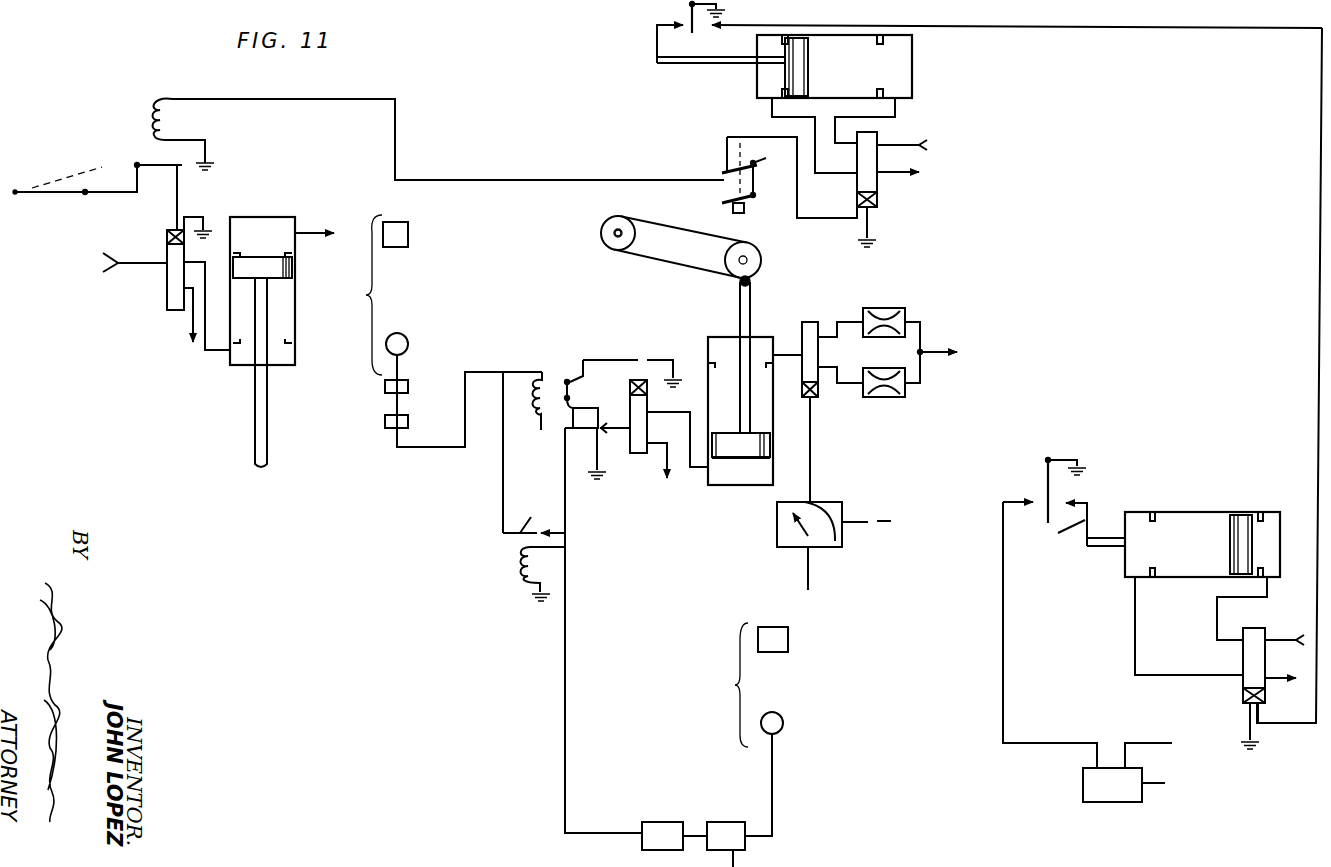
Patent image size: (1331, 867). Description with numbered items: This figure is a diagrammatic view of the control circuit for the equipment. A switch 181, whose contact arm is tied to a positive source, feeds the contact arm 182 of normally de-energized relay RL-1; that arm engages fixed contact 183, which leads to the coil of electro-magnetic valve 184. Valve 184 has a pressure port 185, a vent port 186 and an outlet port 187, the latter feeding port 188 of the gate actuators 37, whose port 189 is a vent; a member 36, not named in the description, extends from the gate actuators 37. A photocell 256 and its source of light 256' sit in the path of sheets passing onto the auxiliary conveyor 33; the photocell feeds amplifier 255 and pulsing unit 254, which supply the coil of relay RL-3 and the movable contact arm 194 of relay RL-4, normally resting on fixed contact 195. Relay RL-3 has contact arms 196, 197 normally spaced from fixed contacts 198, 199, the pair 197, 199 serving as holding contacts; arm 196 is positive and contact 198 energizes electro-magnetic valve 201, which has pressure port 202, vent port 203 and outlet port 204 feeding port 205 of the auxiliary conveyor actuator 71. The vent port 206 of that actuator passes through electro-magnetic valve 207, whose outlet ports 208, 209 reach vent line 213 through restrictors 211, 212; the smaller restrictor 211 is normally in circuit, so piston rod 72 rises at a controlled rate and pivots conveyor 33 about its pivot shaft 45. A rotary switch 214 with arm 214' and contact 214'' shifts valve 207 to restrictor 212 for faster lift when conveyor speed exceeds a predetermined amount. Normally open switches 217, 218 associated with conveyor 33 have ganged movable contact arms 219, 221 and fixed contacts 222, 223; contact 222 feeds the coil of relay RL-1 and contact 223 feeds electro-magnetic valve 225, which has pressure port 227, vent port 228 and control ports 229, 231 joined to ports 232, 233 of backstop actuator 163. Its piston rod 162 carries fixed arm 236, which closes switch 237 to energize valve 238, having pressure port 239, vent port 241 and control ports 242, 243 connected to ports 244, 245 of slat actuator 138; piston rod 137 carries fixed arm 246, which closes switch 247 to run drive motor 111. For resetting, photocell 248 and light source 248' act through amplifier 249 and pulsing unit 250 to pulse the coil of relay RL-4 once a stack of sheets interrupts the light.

The relay RL-1 is at (150, 113).
The switch 181 is at (38, 196).
The contact arm 182 is at (152, 163).
The fixed contact 183 is at (177, 172).
The electro-magnetic valve 184 is at (165, 288).
The pressure port 185 is at (165, 267).
The vent port 186 is at (167, 322).
The outlet port 187 is at (193, 252).
The port 188 is at (228, 353).
The vent port 189 is at (297, 231).
The piston rod 36 is at (255, 426).
The gate actuators 37 is at (300, 318).
The source of light 256' is at (413, 295).
The photocell 256 is at (464, 433).
The amplifier 255 is at (387, 389).
The pulsing unit 254 is at (387, 423).
The relay RL-3 is at (545, 374).
The contact arm 196 is at (578, 380).
The contact arm 197 is at (585, 400).
The fixed contact 198 is at (582, 383).
The fixed contact 199 is at (597, 438).
The electro-magnetic valve 201 is at (668, 404).
The pressure port 202 is at (626, 436).
The vent port 203 is at (650, 452).
The outlet port 204 is at (677, 439).
The port 205 is at (711, 468).
The auxiliary conveyor actuator 71 is at (778, 345).
The piston rod 72 is at (740, 308).
The auxiliary conveyor 33 is at (668, 222).
The pivot shaft 45 is at (618, 238).
The vent port 206 is at (788, 360).
The electro-magnetic valve 207 is at (802, 318).
The outlet port 208 is at (819, 338).
The outlet port 209 is at (822, 370).
The restrictor 211 is at (890, 310).
The restrictor 212 is at (892, 398).
The vent line 213 is at (935, 352).
The rotary switch 214 is at (835, 506).
The rotary switch arm 214' is at (765, 544).
The contact 214'' is at (859, 556).
The normally open switch 237 is at (683, 12).
The fixed arm 236 is at (657, 52).
The piston rod 162 is at (695, 67).
The backstop actuator 163 is at (915, 62).
The port 232 is at (767, 100).
The port 233 is at (902, 99).
The control port 231 is at (826, 156).
The control port 229 is at (857, 175).
The electro-magnetic valve 225 is at (881, 194).
The pressure port 227 is at (881, 142).
The vent port 228 is at (880, 174).
The fixed contact 223 is at (726, 158).
The fixed contact 222 is at (724, 193).
The movable contact arm 221 is at (777, 173).
The movable contact arm 219 is at (757, 169).
The normally open switch 217 is at (744, 205).
The normally open switch 218 is at (708, 154).
The normally open switch 247 is at (1041, 490).
The fixed arm 246 is at (1056, 544).
The piston rod 137 is at (1105, 537).
The slat actuator 138 is at (1215, 517).
The port 245 is at (1130, 578).
The port 244 is at (1270, 578).
The control port 242 is at (1243, 634).
The control port 243 is at (1243, 673).
The electro-magnetic valve 238 is at (1242, 688).
The pressure port 239 is at (1288, 654).
The vent port 241 is at (1268, 683).
The drive motor 111 is at (1083, 785).
The movable contact arm 194 is at (529, 515).
The fixed contact 195 is at (565, 533).
The relay RL-4 is at (499, 566).
The pulsing unit 250 is at (655, 822).
The amplifier 249 is at (725, 822).
The photocell 248 is at (791, 685).
The source of light 248' is at (809, 643).